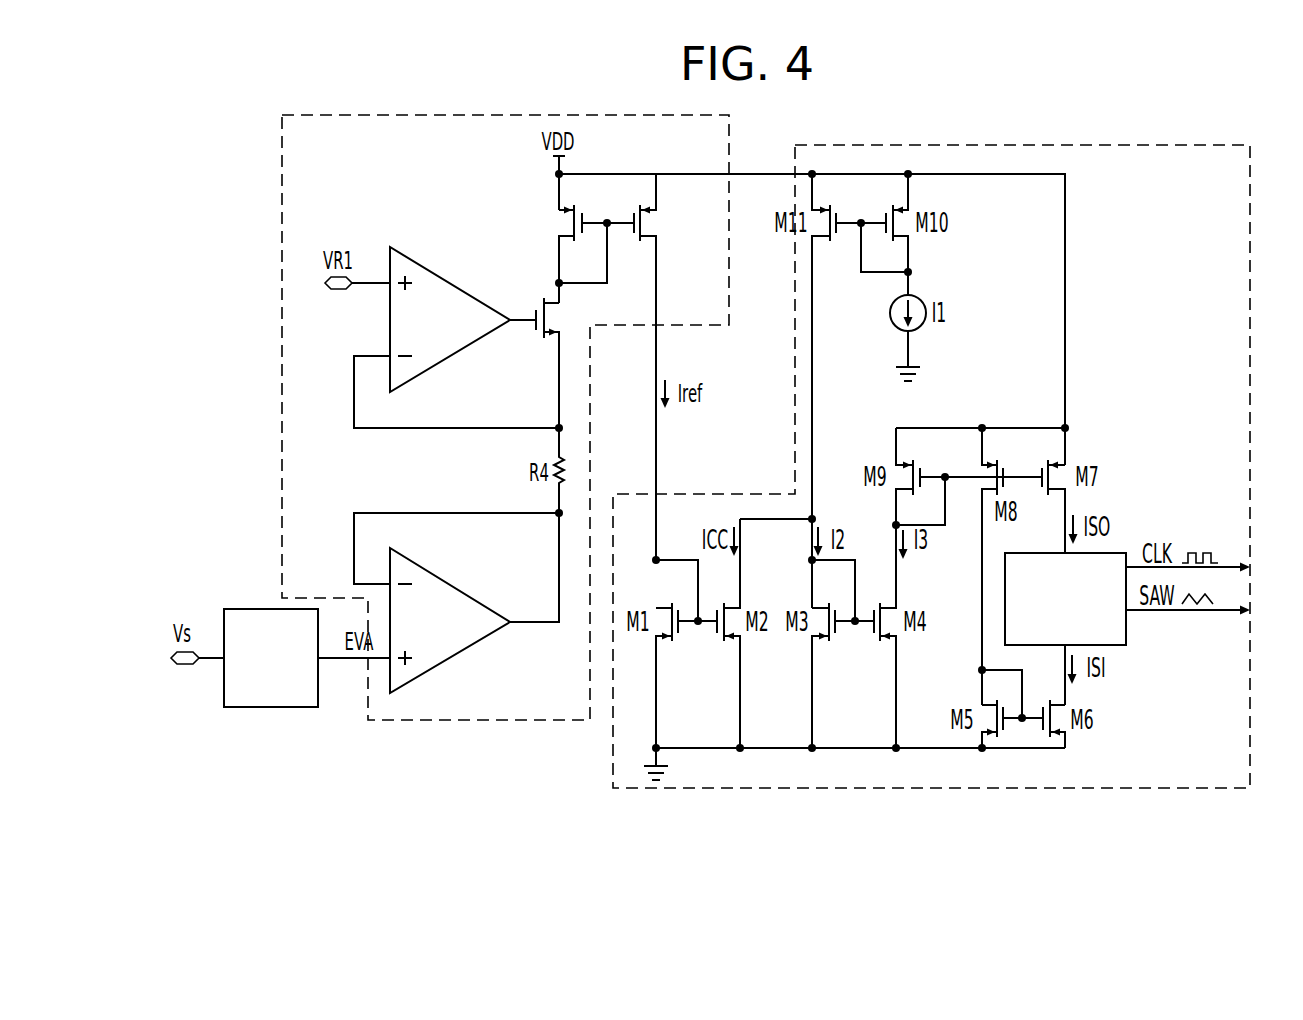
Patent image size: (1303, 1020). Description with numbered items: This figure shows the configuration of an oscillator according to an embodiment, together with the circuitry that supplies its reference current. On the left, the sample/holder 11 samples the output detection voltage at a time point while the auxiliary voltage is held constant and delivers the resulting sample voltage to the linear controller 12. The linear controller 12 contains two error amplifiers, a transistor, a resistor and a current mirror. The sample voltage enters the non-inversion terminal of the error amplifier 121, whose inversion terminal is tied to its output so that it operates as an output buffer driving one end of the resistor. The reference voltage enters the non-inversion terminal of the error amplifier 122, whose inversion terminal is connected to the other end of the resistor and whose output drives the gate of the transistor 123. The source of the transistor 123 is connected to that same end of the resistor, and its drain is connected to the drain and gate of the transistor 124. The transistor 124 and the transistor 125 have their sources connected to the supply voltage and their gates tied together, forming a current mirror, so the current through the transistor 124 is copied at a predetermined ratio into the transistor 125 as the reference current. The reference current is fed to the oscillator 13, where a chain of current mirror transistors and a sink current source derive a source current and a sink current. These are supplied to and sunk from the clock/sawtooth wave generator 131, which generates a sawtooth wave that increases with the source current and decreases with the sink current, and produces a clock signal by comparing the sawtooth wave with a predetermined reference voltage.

The sample/holder 11 is at (258, 707).
The linear controller 12 is at (731, 152).
The oscillator 13 is at (995, 145).
The error amplifier 121 is at (452, 577).
The error amplifier 122 is at (452, 275).
The transistor 123 is at (549, 318).
The transistor 124 is at (576, 207).
The transistor 125 is at (652, 222).
The clock/sawtooth wave generator 131 is at (1113, 645).